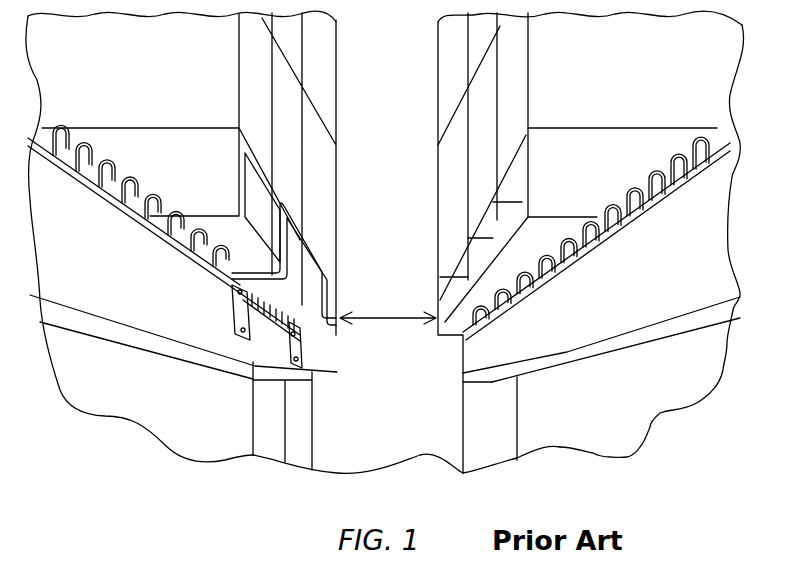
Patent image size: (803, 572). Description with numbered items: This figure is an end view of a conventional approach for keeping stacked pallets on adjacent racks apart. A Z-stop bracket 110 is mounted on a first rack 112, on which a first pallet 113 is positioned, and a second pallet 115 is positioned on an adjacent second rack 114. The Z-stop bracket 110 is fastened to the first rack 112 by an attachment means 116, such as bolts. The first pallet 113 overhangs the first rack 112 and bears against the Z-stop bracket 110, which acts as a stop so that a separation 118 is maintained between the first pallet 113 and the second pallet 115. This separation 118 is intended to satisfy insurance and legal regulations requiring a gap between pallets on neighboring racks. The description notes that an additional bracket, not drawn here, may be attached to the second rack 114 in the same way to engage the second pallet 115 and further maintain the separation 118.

The Z-stop bracket 110 is at (265, 335).
The first rack 112 is at (142, 285).
The first pallet 113 is at (197, 179).
The second rack 114 is at (598, 316).
The second pallet 115 is at (597, 181).
The attachment means 116 is at (240, 342).
The separation 118 is at (380, 320).